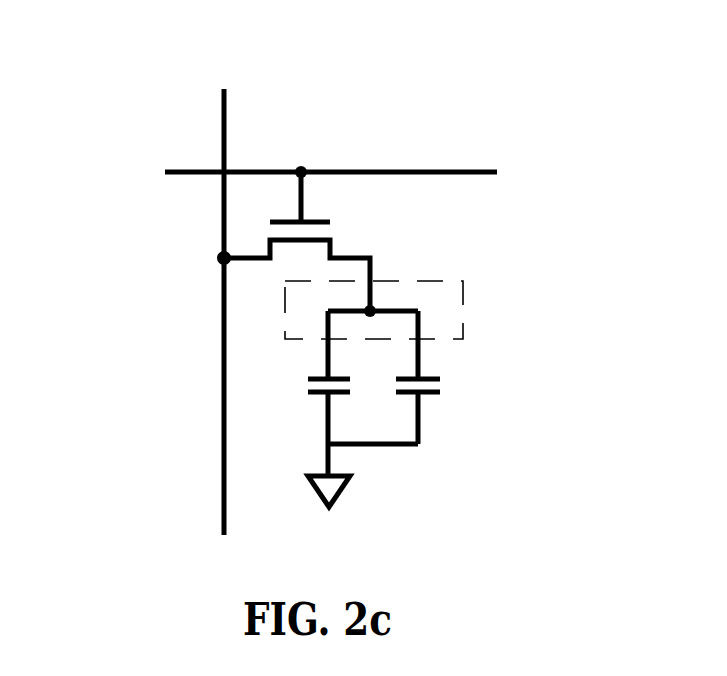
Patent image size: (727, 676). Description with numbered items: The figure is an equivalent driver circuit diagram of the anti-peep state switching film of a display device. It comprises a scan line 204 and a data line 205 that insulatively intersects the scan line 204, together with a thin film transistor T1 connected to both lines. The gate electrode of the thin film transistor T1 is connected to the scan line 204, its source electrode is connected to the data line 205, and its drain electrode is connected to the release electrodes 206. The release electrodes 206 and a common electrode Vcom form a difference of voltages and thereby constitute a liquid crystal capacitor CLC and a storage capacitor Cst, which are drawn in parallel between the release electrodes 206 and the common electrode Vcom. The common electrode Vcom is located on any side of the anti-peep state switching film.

The scan line 204 is at (427, 170).
The data line 205 is at (222, 377).
The release electrodes 206 is at (478, 309).
The thin film transistor T1 is at (296, 241).
The liquid crystal capacitor CLC is at (298, 393).
The storage capacitor Cst is at (407, 377).
The common electrode Vcom is at (328, 515).